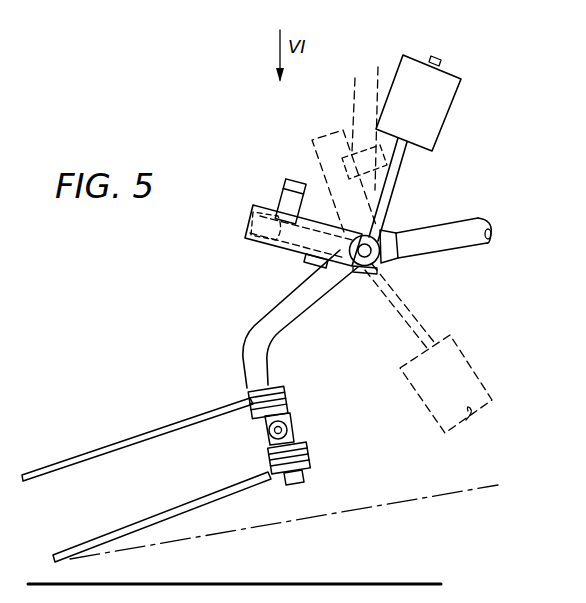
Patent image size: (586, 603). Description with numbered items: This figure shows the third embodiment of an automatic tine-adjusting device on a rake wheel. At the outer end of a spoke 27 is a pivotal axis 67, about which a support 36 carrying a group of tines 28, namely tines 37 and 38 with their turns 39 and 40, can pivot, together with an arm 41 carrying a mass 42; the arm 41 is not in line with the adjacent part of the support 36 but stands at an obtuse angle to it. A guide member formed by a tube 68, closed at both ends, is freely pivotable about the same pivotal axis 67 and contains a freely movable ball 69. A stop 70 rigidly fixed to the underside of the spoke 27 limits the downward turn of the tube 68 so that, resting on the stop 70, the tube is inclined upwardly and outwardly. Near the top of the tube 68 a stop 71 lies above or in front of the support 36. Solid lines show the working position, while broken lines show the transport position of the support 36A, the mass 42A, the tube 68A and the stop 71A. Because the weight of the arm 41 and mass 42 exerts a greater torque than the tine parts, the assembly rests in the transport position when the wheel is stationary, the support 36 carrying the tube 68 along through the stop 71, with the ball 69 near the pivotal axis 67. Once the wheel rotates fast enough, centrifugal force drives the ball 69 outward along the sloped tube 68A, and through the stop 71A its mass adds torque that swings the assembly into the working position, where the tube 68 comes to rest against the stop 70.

The spoke 27 is at (478, 219).
The group of tines 28 is at (155, 422).
The support 36 is at (256, 326).
The support in transport position 36A is at (365, 83).
The tine 37 is at (60, 461).
The tine 38 is at (111, 538).
The turn 39 is at (251, 416).
The turn 40 is at (267, 463).
The arm 41 is at (398, 162).
The mass 42 is at (448, 90).
The mass in transport position 42A is at (477, 378).
The pivotal axis 67 is at (367, 272).
The tube 68 is at (285, 239).
The tube in transport position 68A is at (328, 140).
The ball 69 is at (264, 208).
The stop 70 is at (311, 263).
The stop 71 is at (290, 182).
The stop in transport position 71A is at (393, 138).